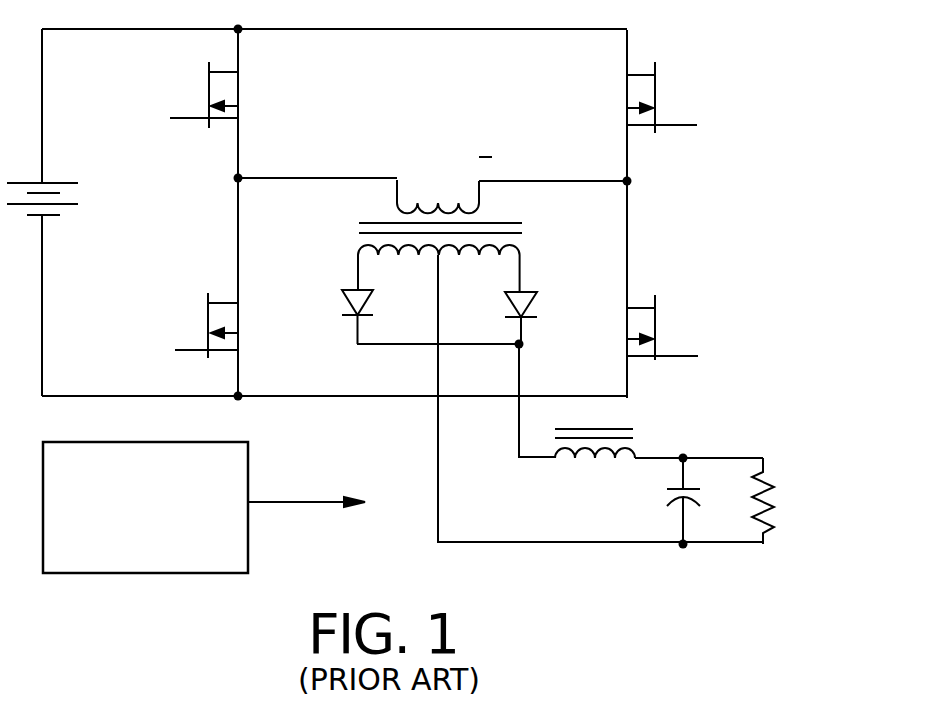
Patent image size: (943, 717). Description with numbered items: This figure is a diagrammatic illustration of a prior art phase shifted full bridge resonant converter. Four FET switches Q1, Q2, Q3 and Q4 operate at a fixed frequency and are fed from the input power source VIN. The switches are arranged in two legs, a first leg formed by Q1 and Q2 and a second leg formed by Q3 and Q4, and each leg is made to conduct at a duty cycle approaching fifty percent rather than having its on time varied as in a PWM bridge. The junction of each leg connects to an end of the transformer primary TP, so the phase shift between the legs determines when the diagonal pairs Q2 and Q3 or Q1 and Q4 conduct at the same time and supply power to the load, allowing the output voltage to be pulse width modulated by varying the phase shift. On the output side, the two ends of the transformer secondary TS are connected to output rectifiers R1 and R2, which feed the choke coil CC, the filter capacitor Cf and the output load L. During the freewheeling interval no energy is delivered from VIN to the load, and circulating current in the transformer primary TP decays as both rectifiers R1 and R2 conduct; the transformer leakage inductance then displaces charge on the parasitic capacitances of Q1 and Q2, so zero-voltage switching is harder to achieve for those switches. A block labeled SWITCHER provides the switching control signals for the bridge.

The input power source VIN is at (53, 182).
The FET switch Q1 is at (203, 103).
The FET switch Q2 is at (200, 287).
The FET switch Q3 is at (639, 105).
The FET switch Q4 is at (643, 289).
The transformer primary TP is at (480, 202).
The transformer secondary TS is at (358, 247).
The output rectifier R1 is at (344, 304).
The output rectifier R2 is at (533, 305).
The choke coil CC is at (592, 460).
The filter capacitor Cf is at (665, 501).
The output load L is at (774, 501).
The switcher control block SWITCHER is at (204, 507).